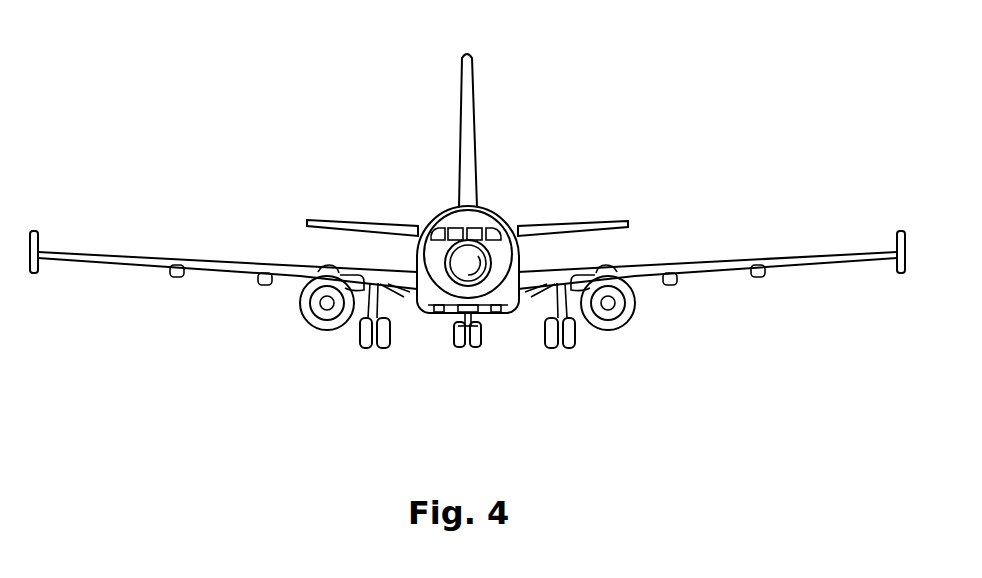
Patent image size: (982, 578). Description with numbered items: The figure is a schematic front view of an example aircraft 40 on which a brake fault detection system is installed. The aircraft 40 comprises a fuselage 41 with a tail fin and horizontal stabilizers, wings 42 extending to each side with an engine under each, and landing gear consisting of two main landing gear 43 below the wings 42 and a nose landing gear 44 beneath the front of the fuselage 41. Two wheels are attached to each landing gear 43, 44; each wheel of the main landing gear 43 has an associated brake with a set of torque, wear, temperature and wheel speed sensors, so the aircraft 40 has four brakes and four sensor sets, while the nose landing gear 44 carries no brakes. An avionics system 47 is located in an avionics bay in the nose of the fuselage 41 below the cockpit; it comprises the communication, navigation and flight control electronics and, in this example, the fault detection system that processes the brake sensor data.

The aircraft 40 is at (598, 71).
The fuselage 41 is at (446, 220).
The wings 42 is at (165, 258).
The main landing gear 43 is at (376, 290).
The nose landing gear 44 is at (462, 346).
The avionics system 47 is at (470, 260).